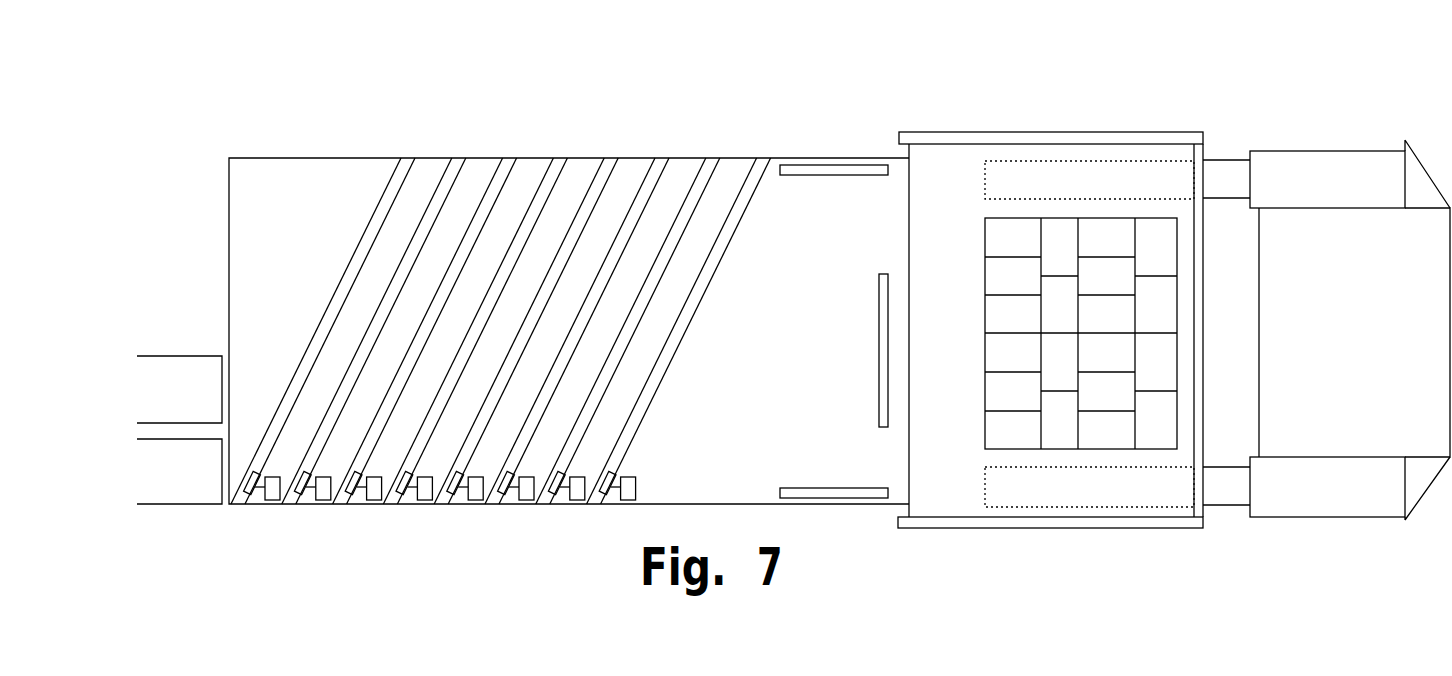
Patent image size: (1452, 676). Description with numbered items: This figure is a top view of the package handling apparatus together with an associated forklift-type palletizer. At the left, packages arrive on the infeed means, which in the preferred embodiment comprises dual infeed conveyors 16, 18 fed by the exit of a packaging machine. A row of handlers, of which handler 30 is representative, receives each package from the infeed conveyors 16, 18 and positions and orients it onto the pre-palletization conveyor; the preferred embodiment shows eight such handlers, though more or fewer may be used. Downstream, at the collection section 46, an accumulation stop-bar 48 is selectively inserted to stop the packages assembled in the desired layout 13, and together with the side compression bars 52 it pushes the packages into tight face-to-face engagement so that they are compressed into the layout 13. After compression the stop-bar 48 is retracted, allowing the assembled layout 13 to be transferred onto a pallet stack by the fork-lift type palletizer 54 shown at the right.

The layout 13 is at (1118, 85).
The infeed conveyor 16 is at (193, 392).
The infeed conveyor 18 is at (212, 548).
The handler 30 is at (327, 548).
The collection section 46 is at (790, 310).
The accumulation stop-bar 48 is at (879, 313).
The side compression bar 52 is at (828, 170).
The fork-lift type palletizer 54 is at (1095, 577).